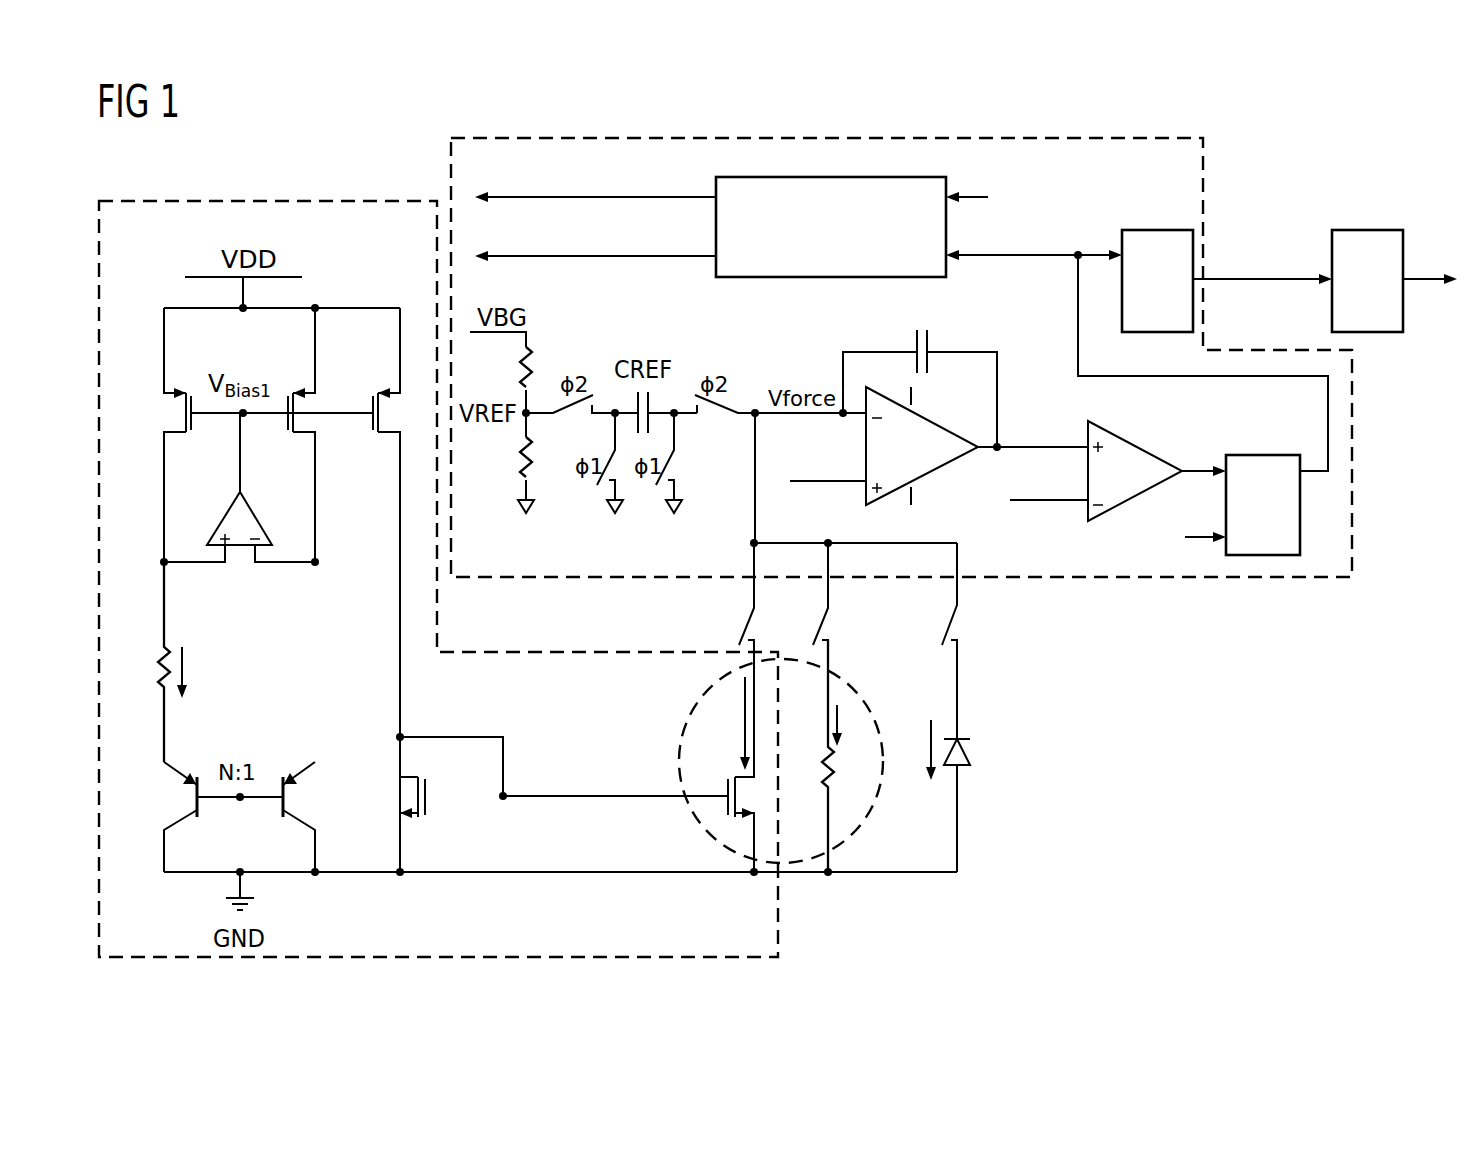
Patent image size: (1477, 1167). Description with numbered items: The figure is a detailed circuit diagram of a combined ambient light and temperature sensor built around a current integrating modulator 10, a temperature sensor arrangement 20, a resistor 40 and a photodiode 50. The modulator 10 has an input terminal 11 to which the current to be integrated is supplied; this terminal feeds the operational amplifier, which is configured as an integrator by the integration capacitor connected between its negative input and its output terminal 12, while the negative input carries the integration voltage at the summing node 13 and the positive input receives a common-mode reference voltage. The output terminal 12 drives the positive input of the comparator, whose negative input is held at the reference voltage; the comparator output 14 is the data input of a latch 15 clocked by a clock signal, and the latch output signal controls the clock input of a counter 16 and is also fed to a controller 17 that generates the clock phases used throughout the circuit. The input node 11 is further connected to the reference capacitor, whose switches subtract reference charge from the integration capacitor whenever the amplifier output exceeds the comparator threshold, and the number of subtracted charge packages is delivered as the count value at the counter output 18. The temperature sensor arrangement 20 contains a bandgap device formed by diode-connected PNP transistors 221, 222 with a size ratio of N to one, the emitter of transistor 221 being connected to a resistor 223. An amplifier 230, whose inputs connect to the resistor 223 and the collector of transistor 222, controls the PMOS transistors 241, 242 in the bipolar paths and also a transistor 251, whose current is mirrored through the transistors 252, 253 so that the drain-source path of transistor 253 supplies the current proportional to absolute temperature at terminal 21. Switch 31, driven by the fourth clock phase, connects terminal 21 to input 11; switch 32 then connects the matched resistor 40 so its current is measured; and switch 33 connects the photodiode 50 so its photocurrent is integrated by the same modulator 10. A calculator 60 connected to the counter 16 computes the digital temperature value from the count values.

The current integrating modulator 10 is at (838, 138).
The temperature sensor arrangement 20 is at (255, 201).
The input terminal 11 is at (752, 568).
The output terminal 12 is at (982, 452).
The summing node 13 is at (756, 408).
The output of the comparator 14 is at (1192, 470).
The latch 15 is at (1264, 455).
The counter 16 is at (1156, 230).
The controller 17 is at (832, 278).
The output of counter 18 is at (1246, 282).
The terminal 21 is at (762, 660).
The switch 31 is at (748, 626).
The switch 32 is at (822, 620).
The switch 33 is at (950, 626).
The resistor 40 is at (824, 752).
The photodiode 50 is at (967, 752).
The calculator 60 is at (1371, 230).
The bipolar PNP transistor 221 is at (188, 790).
The bipolar PNP transistor 222 is at (292, 790).
The resistor 223 is at (163, 650).
The amplifier 230 is at (237, 548).
The PMOS transistor 241 is at (187, 434).
The PMOS transistor 242 is at (287, 434).
The transistor 251 is at (368, 434).
The transistor 252 is at (426, 790).
The transistor 253 is at (727, 812).